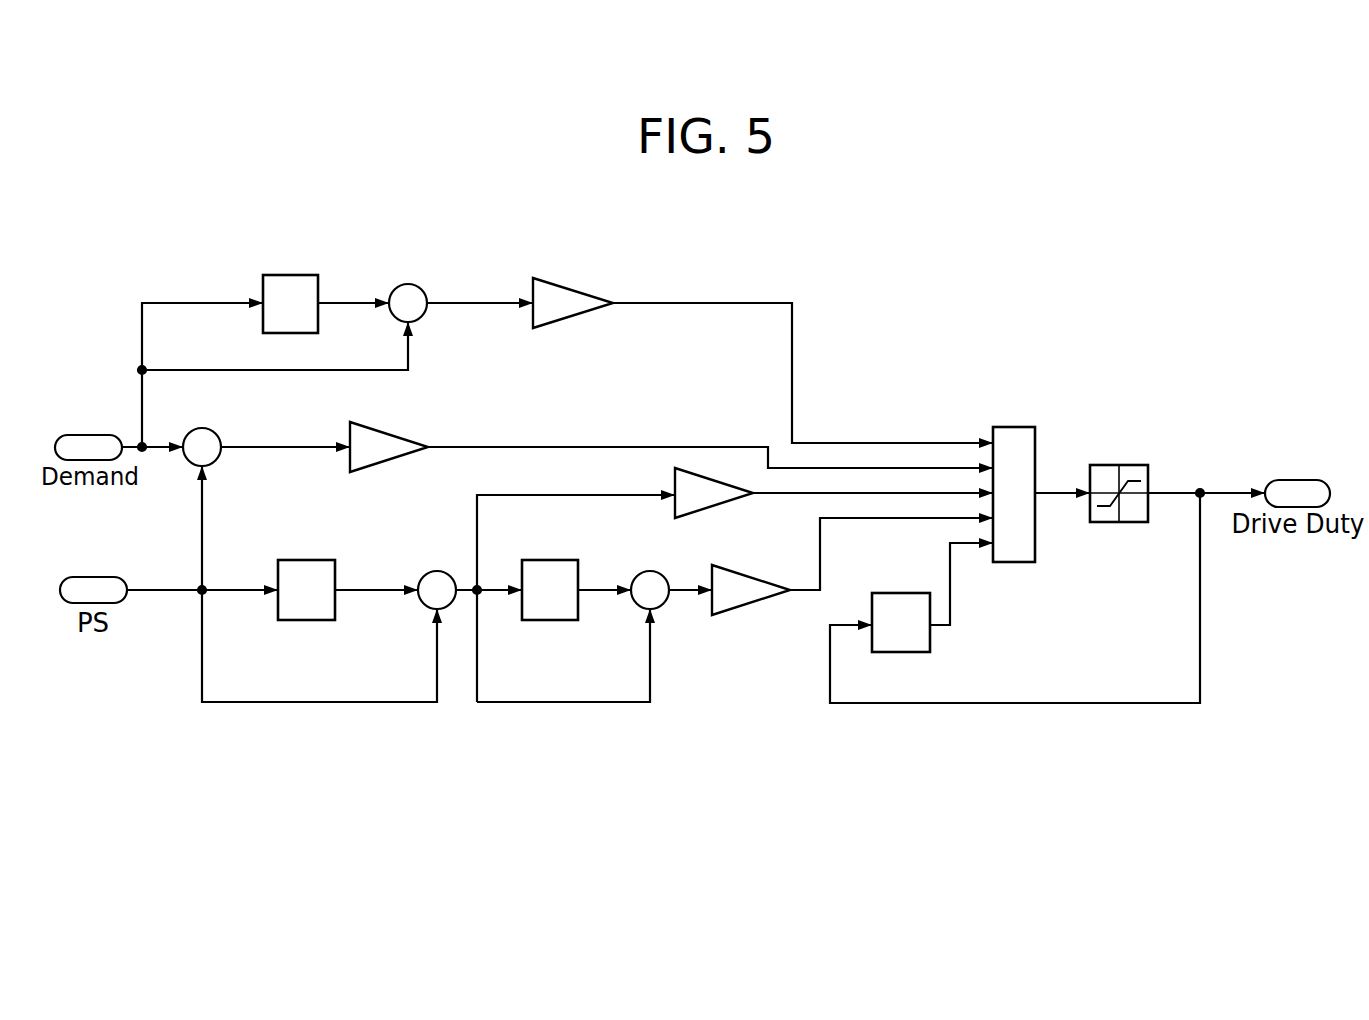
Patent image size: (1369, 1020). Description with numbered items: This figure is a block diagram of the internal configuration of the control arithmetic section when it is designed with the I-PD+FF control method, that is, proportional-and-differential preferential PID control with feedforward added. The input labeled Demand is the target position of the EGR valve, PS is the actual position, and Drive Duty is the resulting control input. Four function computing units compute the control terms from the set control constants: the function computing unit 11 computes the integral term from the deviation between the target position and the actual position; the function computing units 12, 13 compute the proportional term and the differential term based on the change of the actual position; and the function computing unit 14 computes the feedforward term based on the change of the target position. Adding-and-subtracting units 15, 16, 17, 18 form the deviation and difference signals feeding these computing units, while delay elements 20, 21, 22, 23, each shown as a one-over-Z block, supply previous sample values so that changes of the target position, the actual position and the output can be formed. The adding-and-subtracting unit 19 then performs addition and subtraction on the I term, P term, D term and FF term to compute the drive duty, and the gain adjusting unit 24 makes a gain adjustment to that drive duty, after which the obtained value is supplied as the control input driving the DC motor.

The function computing unit 11 is at (402, 438).
The function computing unit 12 is at (708, 509).
The function computing unit 13 is at (757, 580).
The function computing unit 14 is at (569, 290).
The adding-and-subtracting unit 15 is at (213, 429).
The adding-and-subtracting unit 16 is at (437, 571).
The adding-and-subtracting unit 17 is at (648, 571).
The adding-and-subtracting unit 18 is at (410, 284).
The adding-and-subtracting unit 19 is at (1014, 427).
The delay element 20 is at (314, 560).
The delay element 21 is at (554, 560).
The delay element 22 is at (904, 593).
The delay element 23 is at (302, 275).
The gain adjusting unit 24 is at (1123, 465).